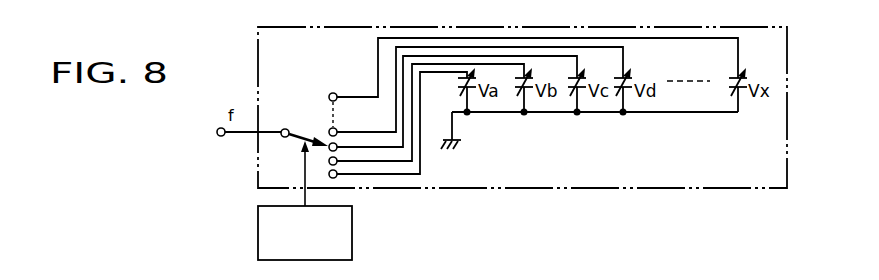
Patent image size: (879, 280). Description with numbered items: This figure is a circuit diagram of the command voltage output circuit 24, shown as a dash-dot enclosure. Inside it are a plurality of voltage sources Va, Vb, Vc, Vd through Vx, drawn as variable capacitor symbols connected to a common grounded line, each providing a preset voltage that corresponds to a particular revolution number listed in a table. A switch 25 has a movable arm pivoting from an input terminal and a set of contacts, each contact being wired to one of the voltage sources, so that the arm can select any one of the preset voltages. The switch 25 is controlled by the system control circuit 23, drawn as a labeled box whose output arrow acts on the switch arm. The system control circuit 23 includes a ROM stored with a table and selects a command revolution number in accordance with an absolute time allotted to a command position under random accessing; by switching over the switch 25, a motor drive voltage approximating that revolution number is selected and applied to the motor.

The system control circuit 23 is at (258, 221).
The command voltage output circuit 24 is at (257, 52).
The switch 25 is at (287, 128).